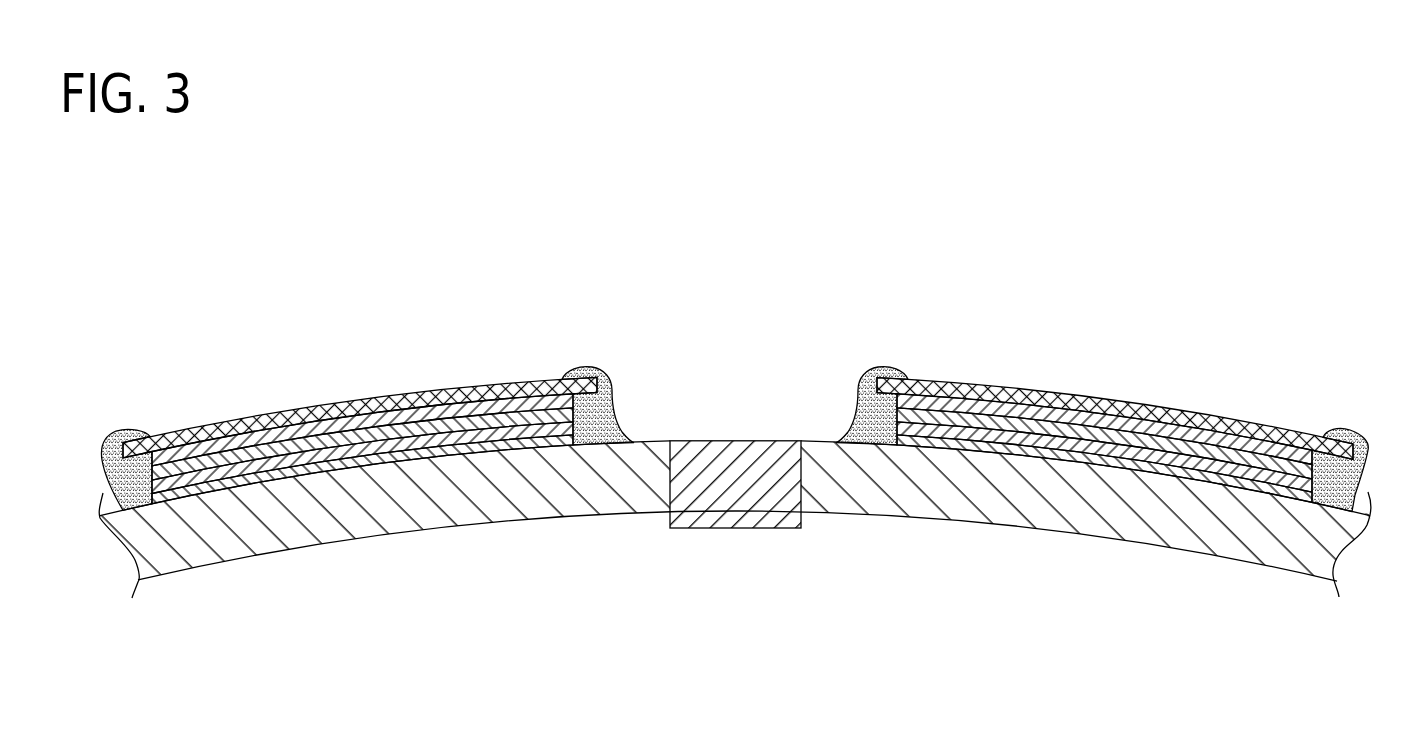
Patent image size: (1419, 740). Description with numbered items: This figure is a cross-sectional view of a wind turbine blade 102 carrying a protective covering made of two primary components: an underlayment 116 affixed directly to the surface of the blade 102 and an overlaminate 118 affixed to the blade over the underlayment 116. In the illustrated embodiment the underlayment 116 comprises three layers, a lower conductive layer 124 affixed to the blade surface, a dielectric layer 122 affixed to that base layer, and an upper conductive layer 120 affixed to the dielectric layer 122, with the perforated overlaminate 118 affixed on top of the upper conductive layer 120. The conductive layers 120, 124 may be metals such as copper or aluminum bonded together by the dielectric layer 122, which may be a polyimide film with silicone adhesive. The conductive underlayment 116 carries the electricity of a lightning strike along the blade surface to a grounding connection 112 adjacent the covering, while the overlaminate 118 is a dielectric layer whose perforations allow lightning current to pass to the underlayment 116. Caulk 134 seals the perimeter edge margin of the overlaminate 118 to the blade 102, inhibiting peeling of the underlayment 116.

The blade 102 is at (368, 538).
The grounding connection 112 is at (722, 529).
The underlayment 116 is at (1365, 470).
The overlaminate 118 is at (1115, 404).
The upper conductive layer 120 is at (327, 425).
The dielectric layer 122 is at (1005, 427).
The lower conductive layer 124 is at (482, 447).
The caulk 134 is at (104, 468).